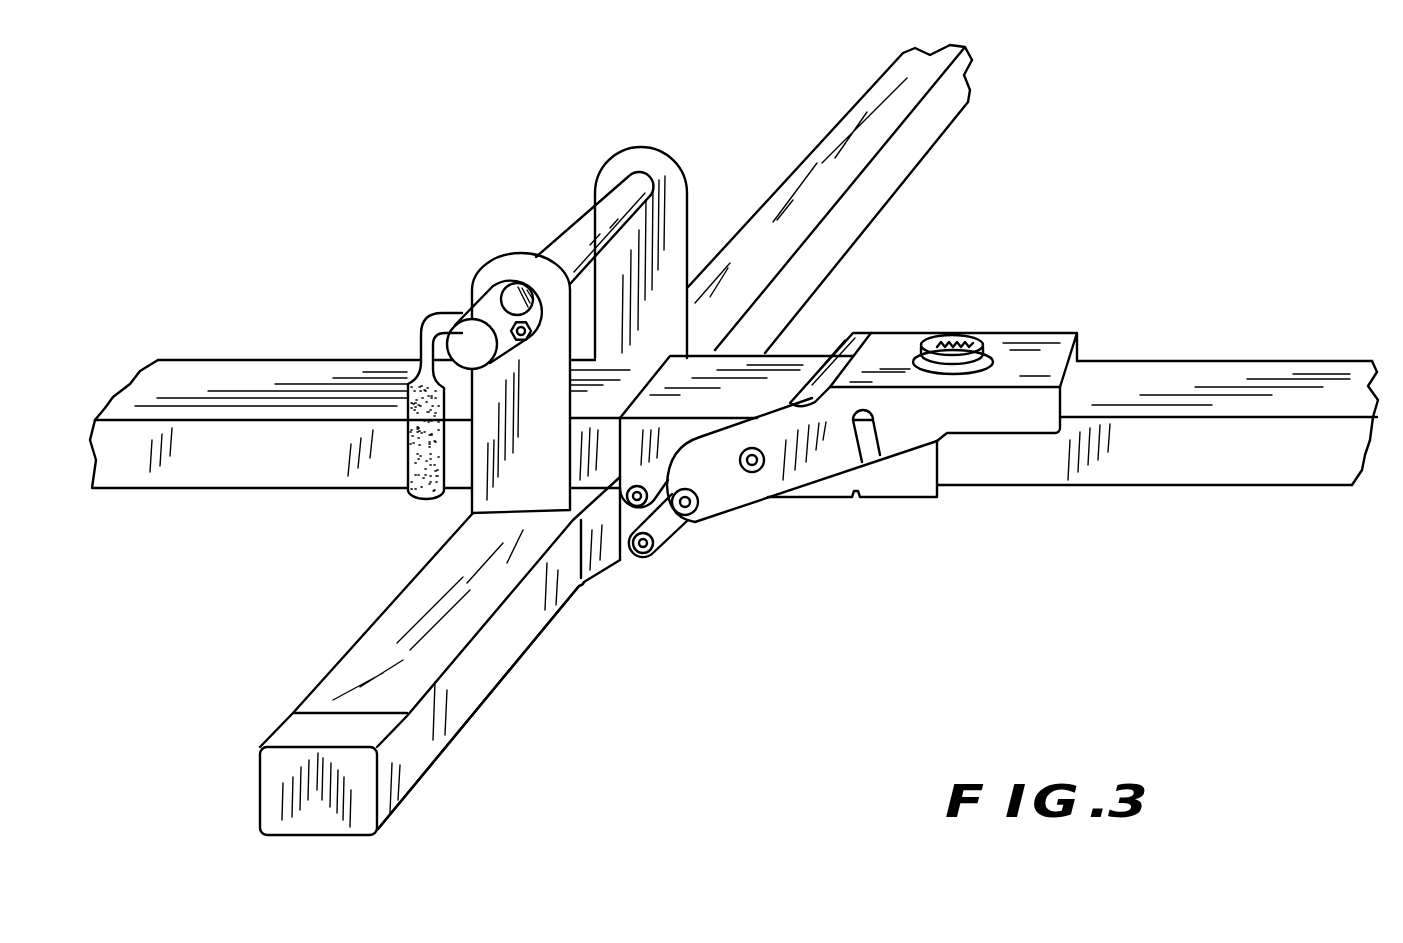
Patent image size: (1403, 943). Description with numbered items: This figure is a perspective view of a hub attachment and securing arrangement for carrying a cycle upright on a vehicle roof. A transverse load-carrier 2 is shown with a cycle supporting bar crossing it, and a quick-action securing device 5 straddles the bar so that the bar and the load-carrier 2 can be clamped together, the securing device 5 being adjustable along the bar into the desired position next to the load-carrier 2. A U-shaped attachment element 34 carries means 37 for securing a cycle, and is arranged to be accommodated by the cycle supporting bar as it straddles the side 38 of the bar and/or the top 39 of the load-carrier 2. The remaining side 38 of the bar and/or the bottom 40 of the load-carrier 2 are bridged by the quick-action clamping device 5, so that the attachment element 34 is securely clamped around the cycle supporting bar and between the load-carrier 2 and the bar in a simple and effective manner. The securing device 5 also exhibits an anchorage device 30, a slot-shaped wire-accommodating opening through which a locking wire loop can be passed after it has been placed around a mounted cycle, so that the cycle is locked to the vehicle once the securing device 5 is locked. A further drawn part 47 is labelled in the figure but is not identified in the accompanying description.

The load-carrier 2 is at (440, 658).
The securing device 5 is at (1037, 330).
The anchorage device 30 is at (878, 458).
The U-shaped attachment element 34 is at (684, 158).
The means for securing to a cycle 37 is at (572, 228).
The side of the cycle supporting bar 38 is at (1193, 462).
The top of the load-carrier 39 is at (388, 645).
The bottom of the load-carrier 40 is at (435, 763).
The rail top face 47 is at (1248, 305).